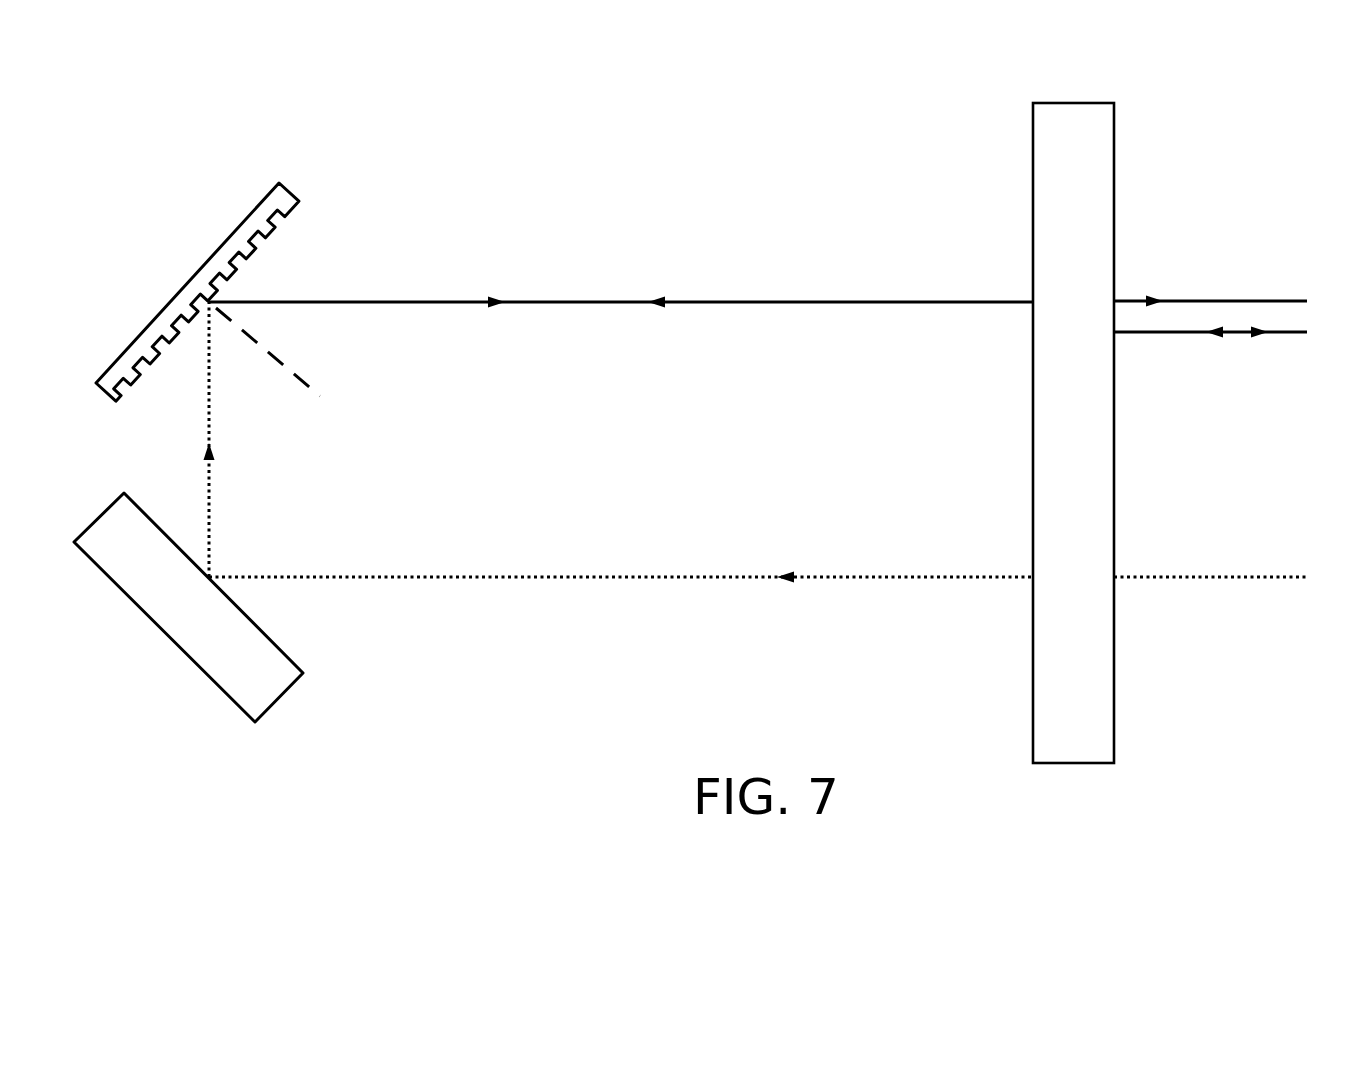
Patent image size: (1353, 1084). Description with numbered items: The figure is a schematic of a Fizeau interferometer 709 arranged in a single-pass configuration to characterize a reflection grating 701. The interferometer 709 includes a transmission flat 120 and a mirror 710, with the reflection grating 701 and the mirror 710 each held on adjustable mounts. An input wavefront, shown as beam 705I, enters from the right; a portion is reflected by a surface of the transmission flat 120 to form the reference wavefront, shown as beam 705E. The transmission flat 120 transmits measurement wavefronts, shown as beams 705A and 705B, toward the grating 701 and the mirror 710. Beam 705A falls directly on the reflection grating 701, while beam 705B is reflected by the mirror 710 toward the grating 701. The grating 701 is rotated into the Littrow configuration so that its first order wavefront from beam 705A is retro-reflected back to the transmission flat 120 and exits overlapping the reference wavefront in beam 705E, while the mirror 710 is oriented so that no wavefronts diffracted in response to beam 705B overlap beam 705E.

The transmission flat 120 is at (1102, 147).
The reflection grating 701 is at (298, 195).
The beam 705A is at (476, 302).
The beam 705B is at (488, 577).
The beam 705E is at (1207, 300).
The beam 705I is at (1225, 333).
The Fizeau interferometer 709 is at (631, 670).
The mirror 710 is at (222, 681).